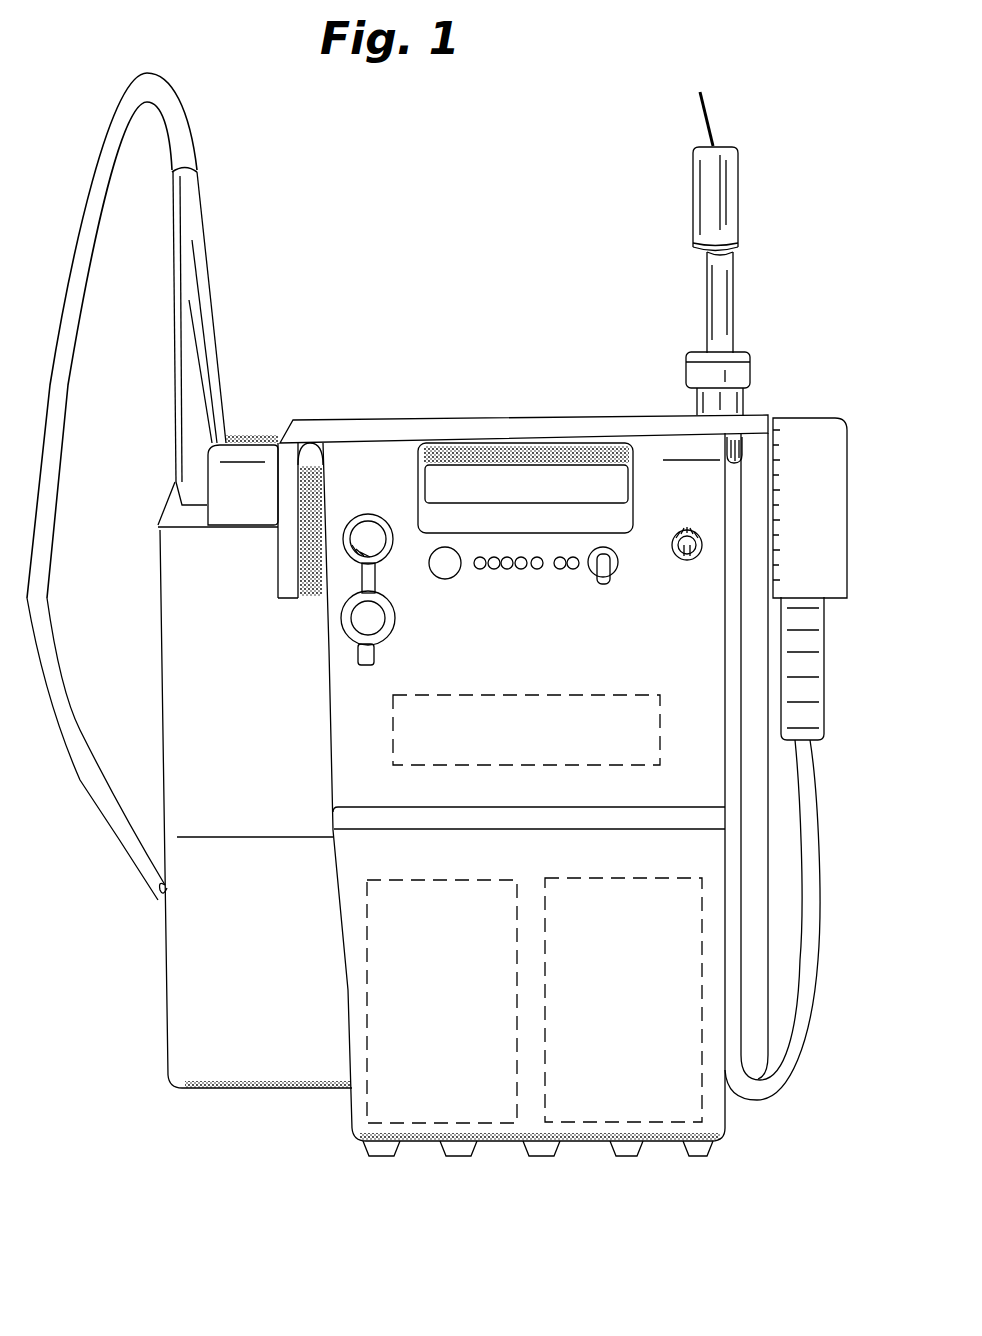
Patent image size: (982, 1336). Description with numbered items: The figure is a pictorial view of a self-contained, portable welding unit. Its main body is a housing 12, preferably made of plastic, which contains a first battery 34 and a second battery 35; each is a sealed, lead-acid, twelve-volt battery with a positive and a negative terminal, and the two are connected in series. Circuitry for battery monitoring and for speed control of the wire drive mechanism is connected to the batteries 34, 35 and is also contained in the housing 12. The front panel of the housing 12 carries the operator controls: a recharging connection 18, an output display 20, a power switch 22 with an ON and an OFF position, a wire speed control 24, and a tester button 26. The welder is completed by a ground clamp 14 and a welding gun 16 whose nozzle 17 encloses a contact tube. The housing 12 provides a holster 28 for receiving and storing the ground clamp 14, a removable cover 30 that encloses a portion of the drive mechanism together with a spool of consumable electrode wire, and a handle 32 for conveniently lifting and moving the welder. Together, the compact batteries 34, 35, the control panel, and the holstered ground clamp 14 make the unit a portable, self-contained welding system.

The housing 12 is at (365, 1107).
The ground clamp 14 is at (805, 637).
The welding gun 16 is at (690, 367).
The nozzle 17 is at (705, 187).
The recharging connection 18 is at (368, 514).
The output display 20 is at (503, 569).
The power switch 22 is at (614, 567).
The wire speed control 24 is at (687, 561).
The tester button 26 is at (433, 560).
The holster 28 is at (817, 478).
The removable cover 30 is at (168, 975).
The handle 32 is at (537, 448).
The first battery 34 is at (677, 1095).
The second battery 35 is at (473, 1095).